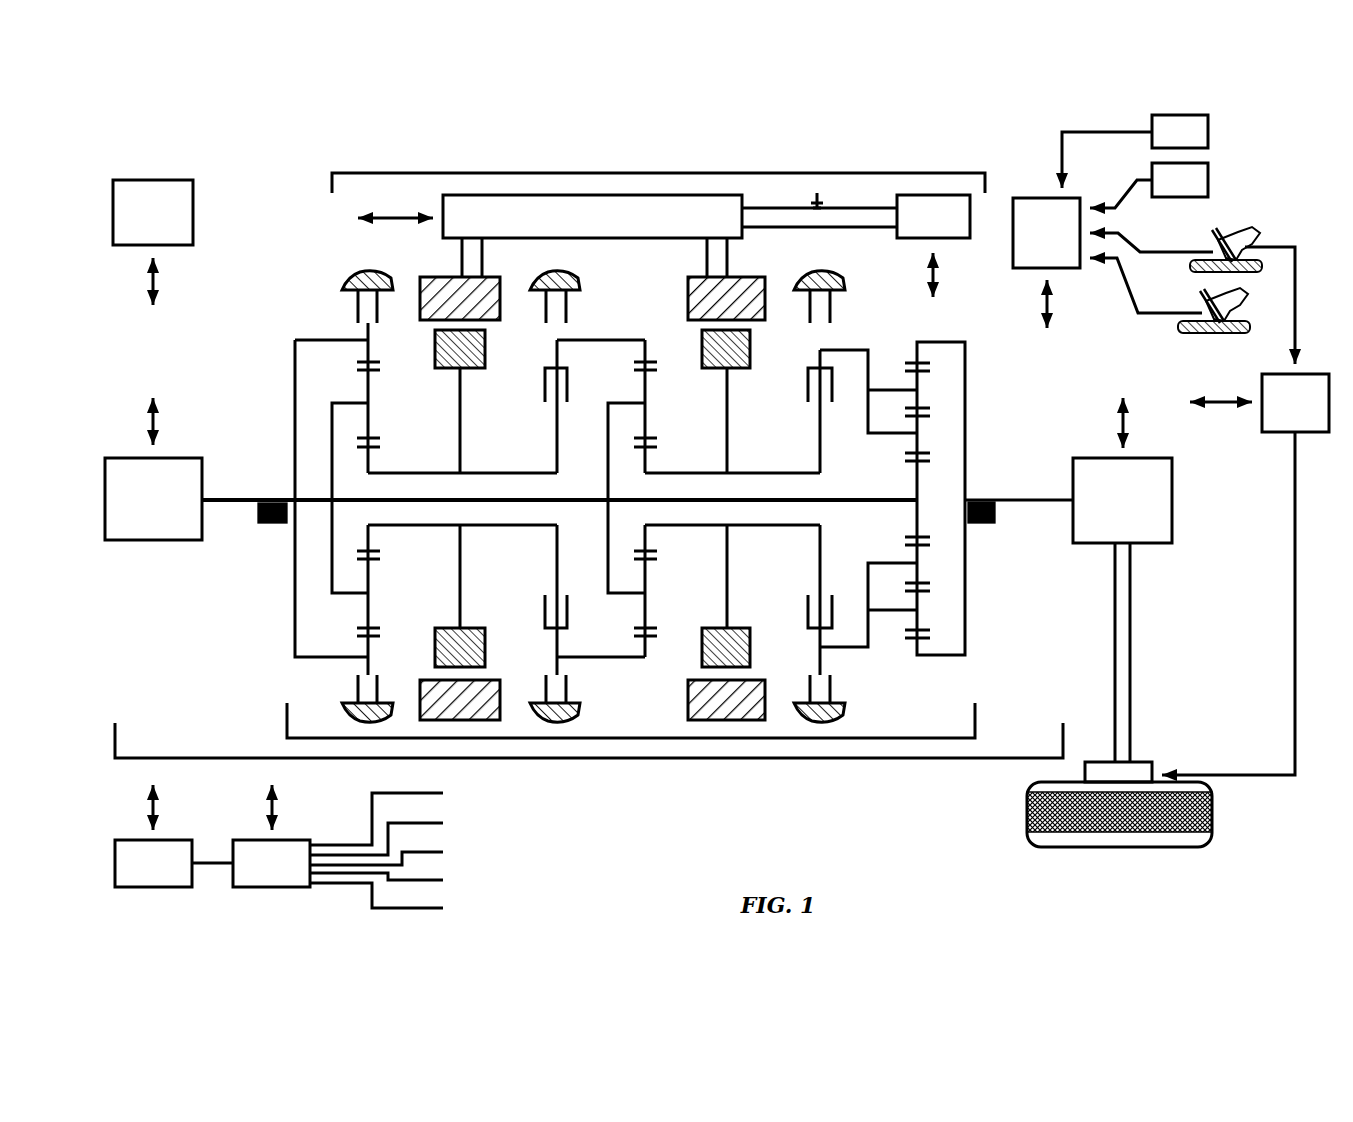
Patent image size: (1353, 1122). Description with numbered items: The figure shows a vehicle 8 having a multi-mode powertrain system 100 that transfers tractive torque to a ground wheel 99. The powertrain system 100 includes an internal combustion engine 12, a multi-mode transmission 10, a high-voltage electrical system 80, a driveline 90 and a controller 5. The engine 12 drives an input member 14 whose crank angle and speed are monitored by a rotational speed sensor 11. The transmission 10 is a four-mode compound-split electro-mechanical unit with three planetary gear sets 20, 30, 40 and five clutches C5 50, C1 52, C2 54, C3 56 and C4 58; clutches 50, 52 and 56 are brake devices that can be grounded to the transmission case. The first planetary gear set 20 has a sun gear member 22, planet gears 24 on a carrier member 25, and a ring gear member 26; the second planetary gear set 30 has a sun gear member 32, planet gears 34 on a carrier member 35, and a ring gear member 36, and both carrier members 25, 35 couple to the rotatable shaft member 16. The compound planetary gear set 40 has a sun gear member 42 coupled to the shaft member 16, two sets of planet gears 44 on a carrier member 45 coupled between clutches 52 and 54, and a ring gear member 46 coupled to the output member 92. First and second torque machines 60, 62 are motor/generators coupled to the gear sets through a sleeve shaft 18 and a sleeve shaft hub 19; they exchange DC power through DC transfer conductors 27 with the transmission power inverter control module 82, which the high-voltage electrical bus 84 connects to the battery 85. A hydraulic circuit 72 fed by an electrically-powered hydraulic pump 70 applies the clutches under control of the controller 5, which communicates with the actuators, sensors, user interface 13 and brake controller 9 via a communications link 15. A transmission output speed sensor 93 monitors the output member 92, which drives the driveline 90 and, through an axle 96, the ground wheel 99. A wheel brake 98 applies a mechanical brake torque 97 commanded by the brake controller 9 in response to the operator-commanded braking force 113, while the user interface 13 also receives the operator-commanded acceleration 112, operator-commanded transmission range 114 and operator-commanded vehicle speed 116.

The controller 5 is at (153, 212).
The vehicle 8 is at (812, 153).
The brake controller 9 is at (1295, 403).
The multi-mode transmission 10 is at (652, 554).
The rotational speed sensor 11 is at (272, 525).
The internal combustion engine 12 is at (153, 499).
The user interface 13 is at (1046, 233).
The input member 14 is at (240, 505).
The communications link 15 is at (686, 512).
The rotatable shaft member 16 is at (565, 498).
The sleeve shaft 18 is at (500, 471).
The sleeve shaft hub 19 is at (772, 471).
The first planetary gear set 20 is at (384, 548).
The sun gear member 22 is at (372, 444).
The planet gears 24 is at (372, 404).
The carrier member 25 is at (332, 470).
The ring gear member 26 is at (372, 355).
The DC transfer conductors 27 is at (484, 266).
The second planetary gear set 30 is at (657, 586).
The sun gear member 32 is at (652, 447).
The planet gears 34 is at (646, 404).
The carrier member 35 is at (606, 508).
The ring gear member 36 is at (648, 355).
The third planetary gear set 40 is at (903, 486).
The sun gear member 42 is at (920, 532).
The planet gears 44 is at (920, 565).
The carrier member 45 is at (870, 352).
The ring gear member 46 is at (915, 640).
The clutch C5 50 is at (342, 474).
The clutch C1 52 is at (852, 476).
The clutch C2 54 is at (808, 393).
The clutch C3 56 is at (572, 297).
The clutch C4 58 is at (545, 393).
The first torque machine 60 is at (482, 323).
The second torque machine 62 is at (752, 323).
The electrically-powered hydraulic pump 70 is at (153, 863).
The hydraulic circuit 72 is at (332, 850).
The high-voltage electrical system 80 is at (665, 173).
The transmission power inverter control module 82 is at (592, 216).
The high-voltage electrical bus 84 is at (853, 207).
The high-voltage battery 85 is at (933, 216).
The driveline 90 is at (1122, 500).
The output member 92 is at (1020, 497).
The transmission output speed sensor 93 is at (1000, 522).
The axle 96 is at (1132, 652).
The mechanical brake torque 97 is at (1228, 514).
The wheel brake 98 is at (1160, 770).
The ground wheel 99 is at (1215, 828).
The multi-mode powertrain system 100 is at (665, 758).
The operator-commanded acceleration 112 is at (1202, 308).
The operator-commanded braking force 113 is at (1212, 248).
The operator-commanded transmission range 114 is at (1149, 185).
The operator-commanded vehicle speed 116 is at (1135, 151).